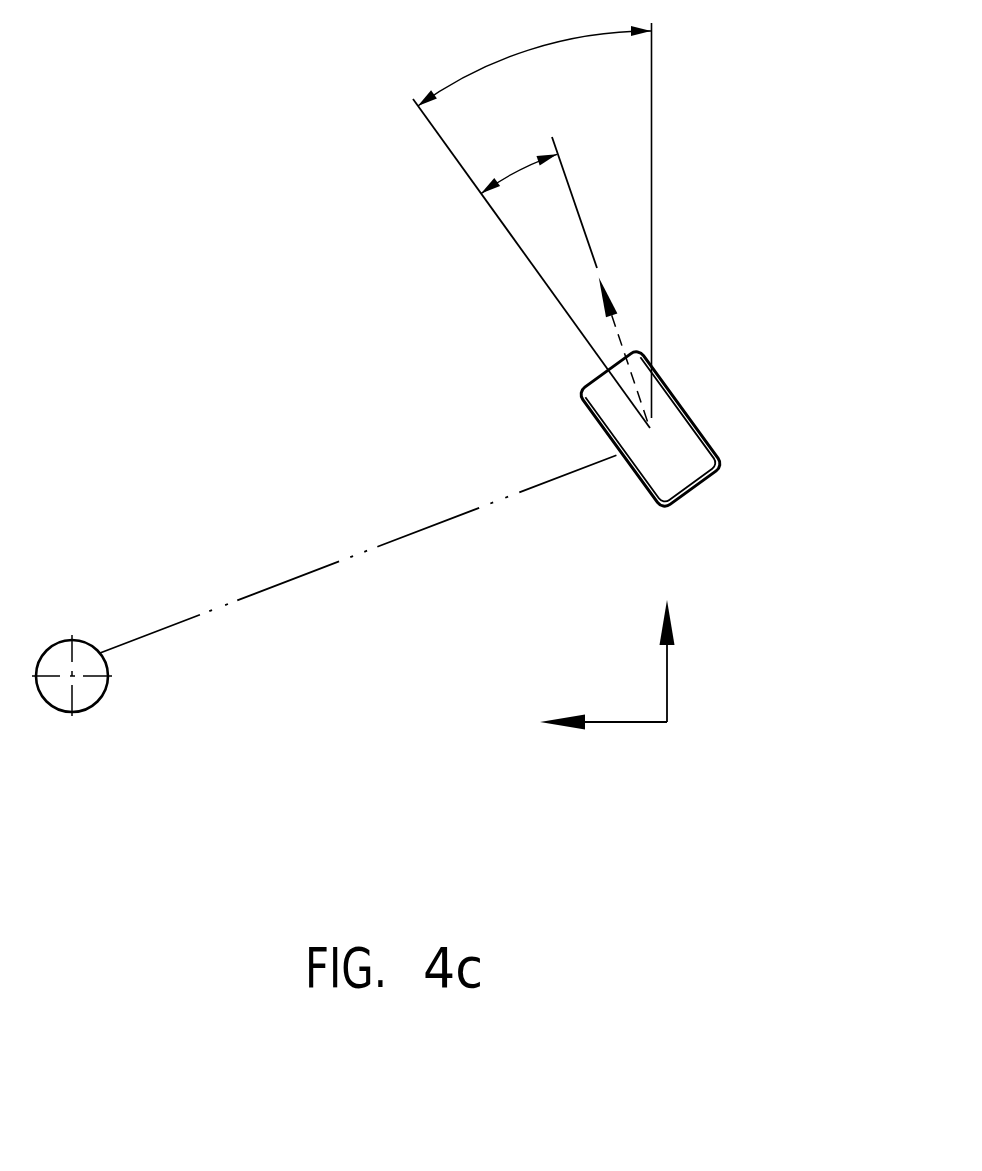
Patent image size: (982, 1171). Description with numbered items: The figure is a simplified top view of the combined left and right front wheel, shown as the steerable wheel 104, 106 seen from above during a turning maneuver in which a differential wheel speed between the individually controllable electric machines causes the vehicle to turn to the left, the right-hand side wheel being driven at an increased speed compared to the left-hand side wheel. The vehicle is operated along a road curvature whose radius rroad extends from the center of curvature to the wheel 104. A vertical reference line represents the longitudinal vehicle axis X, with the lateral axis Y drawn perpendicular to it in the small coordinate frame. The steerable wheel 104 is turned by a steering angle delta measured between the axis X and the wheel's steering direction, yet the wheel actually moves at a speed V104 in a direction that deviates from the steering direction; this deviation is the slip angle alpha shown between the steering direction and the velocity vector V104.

The left steerable wheel 104 is at (696, 323).
The tire 106 is at (687, 405).
The speed of steerable wheel V104 is at (622, 342).
The road curvature radius rroad is at (293, 579).
The steering angle delta is at (532, 221).
The slip angle alpha is at (519, 162).
The vehicle longitudinal axis X is at (690, 661).
The vehicle lateral axis Y is at (603, 753).